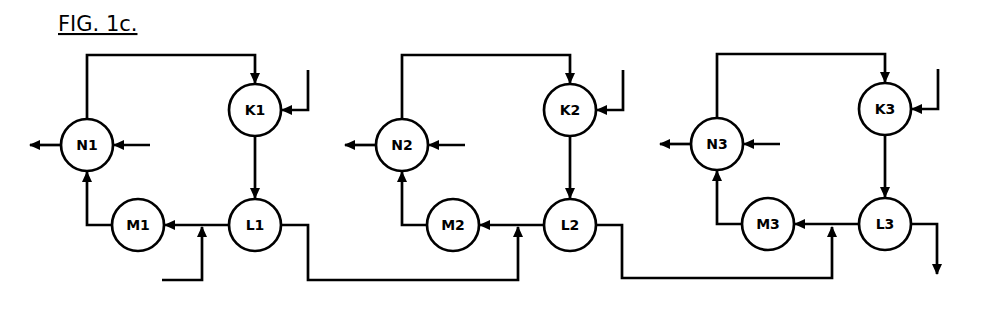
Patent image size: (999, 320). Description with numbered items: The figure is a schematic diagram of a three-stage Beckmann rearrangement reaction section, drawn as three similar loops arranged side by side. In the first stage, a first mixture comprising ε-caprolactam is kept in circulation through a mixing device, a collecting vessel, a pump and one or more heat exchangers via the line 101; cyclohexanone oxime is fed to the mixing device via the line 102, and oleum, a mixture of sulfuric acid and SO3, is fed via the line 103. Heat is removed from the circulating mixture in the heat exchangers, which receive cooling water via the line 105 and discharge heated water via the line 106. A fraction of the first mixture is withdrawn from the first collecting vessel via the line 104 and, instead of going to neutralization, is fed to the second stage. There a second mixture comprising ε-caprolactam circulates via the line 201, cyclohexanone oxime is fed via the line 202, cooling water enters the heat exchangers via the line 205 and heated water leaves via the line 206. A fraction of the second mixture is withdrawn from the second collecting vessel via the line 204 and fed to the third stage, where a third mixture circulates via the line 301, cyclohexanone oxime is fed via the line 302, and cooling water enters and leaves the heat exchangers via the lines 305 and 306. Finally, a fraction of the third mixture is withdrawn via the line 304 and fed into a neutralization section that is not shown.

The line 101 is at (171, 140).
The line 102 is at (295, 90).
The line 103 is at (182, 253).
The line 104 is at (399, 252).
The line 105 is at (132, 135).
The line 106 is at (45, 135).
The line 201 is at (486, 140).
The line 202 is at (610, 90).
The line 204 is at (714, 251).
The line 205 is at (447, 135).
The line 206 is at (360, 135).
The line 301 is at (801, 139).
The line 302 is at (925, 89).
The line 304 is at (922, 249).
The line 305 is at (762, 134).
The line 306 is at (675, 134).